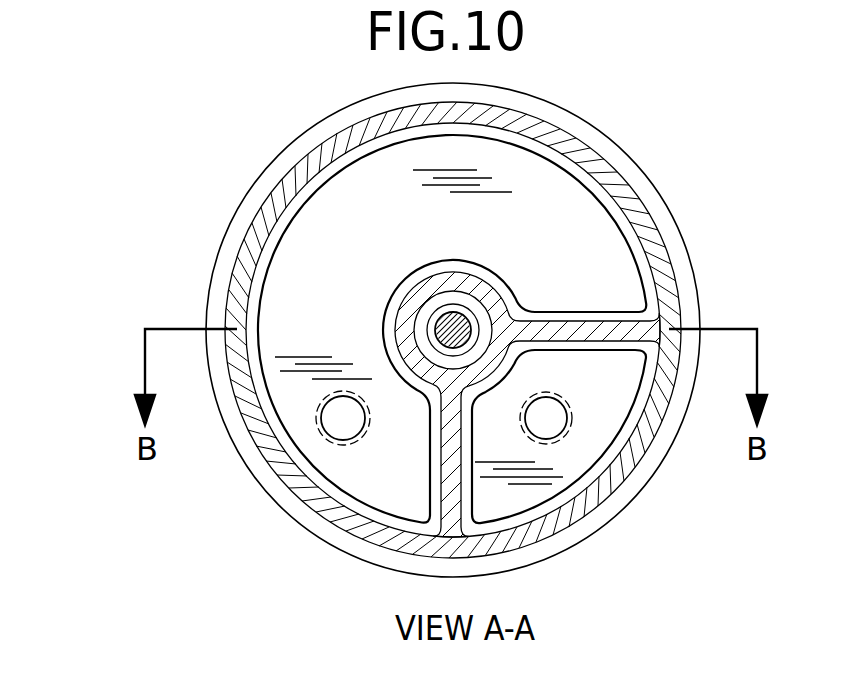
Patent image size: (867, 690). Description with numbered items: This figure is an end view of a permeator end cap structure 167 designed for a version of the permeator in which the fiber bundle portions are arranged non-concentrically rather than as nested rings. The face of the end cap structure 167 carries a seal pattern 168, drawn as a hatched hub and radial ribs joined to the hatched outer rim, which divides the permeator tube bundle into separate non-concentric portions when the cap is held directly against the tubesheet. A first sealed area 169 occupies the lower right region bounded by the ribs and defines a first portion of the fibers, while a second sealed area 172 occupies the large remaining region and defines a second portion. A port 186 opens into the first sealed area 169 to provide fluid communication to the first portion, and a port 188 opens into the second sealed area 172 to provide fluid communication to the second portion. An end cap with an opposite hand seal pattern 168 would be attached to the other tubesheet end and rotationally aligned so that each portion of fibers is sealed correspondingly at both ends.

The permeator end cap structure 167 is at (615, 138).
The seal pattern 168 is at (423, 557).
The second sealed area 172 is at (375, 192).
The first sealed area 169 is at (495, 498).
The port 188 is at (343, 427).
The port 186 is at (544, 423).